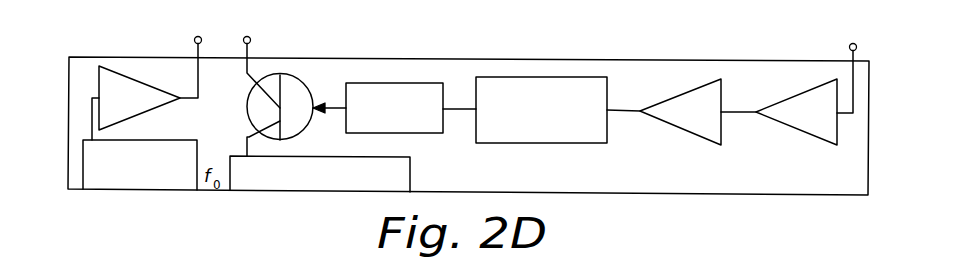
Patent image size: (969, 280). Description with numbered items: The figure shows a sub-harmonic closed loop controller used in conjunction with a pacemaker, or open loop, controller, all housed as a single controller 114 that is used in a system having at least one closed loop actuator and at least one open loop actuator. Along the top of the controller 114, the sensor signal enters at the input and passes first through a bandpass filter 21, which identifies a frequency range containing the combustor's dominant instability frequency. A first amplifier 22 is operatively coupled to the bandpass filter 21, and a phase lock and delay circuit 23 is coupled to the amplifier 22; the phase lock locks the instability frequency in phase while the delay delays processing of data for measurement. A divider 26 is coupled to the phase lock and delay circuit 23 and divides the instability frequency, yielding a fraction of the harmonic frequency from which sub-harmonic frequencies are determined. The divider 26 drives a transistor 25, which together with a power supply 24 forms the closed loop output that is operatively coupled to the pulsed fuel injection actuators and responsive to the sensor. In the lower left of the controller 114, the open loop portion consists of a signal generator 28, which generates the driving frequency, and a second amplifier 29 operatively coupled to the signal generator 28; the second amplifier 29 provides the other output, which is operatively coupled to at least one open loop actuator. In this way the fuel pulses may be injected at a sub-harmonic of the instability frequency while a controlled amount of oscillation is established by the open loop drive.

The bandpass filter 21 is at (820, 95).
The amplifier 22 is at (705, 95).
The phase lock and delay circuit 23 is at (575, 93).
The power supply 24 is at (345, 182).
The transistor 25 is at (272, 82).
The divider 26 is at (427, 92).
The signal generator 28 is at (182, 182).
The second amplifier 29 is at (116, 88).
The controller 114 is at (868, 205).